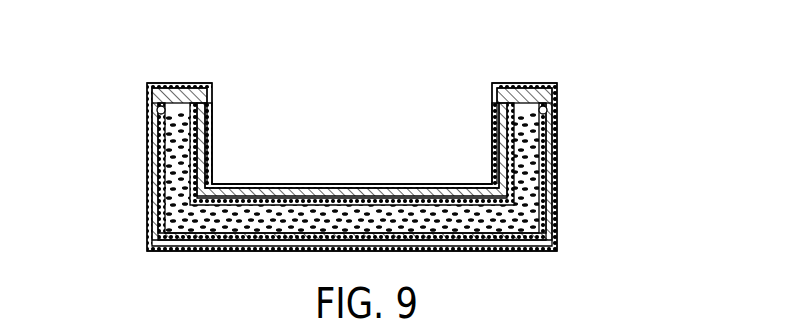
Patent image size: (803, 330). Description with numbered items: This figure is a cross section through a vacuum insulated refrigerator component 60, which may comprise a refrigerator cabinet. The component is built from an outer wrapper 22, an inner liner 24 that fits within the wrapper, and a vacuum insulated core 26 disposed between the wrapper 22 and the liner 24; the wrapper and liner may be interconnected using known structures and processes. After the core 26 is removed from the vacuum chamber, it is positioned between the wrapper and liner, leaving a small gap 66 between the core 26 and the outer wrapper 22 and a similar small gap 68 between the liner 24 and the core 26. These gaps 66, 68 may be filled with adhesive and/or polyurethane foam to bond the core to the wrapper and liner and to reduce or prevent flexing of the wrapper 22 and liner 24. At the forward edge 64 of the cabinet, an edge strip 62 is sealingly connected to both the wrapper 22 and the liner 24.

The outer wrapper 22 is at (557, 166).
The inner liner 24 is at (333, 185).
The vacuum insulated core structure 26 is at (235, 224).
The vacuum insulated refrigerator component 60 is at (562, 128).
The edge strip 62 is at (170, 85).
The forward edge 64 is at (557, 82).
The gap or space 66 is at (155, 180).
The gap or space 68 is at (200, 148).